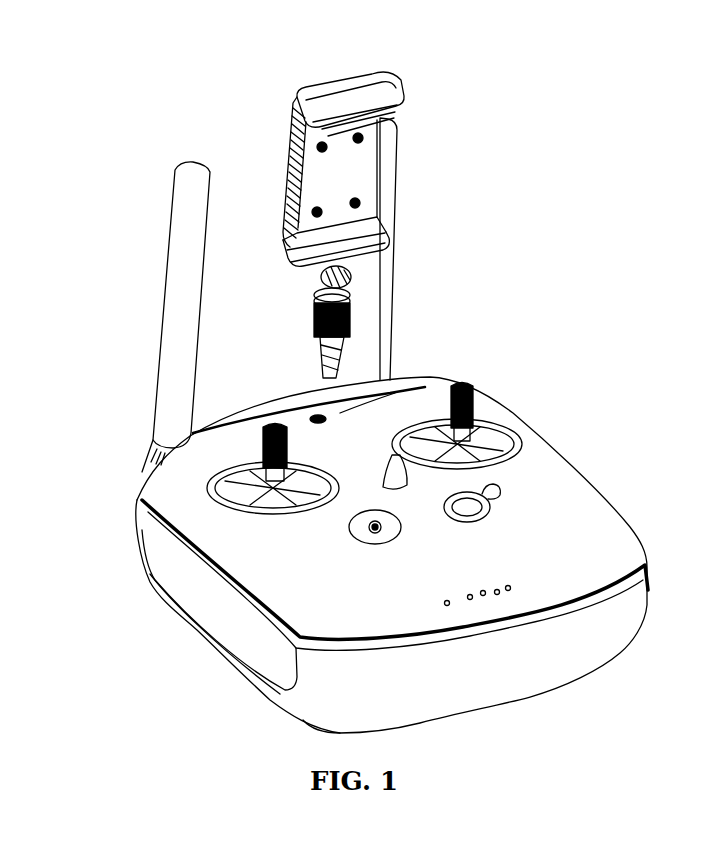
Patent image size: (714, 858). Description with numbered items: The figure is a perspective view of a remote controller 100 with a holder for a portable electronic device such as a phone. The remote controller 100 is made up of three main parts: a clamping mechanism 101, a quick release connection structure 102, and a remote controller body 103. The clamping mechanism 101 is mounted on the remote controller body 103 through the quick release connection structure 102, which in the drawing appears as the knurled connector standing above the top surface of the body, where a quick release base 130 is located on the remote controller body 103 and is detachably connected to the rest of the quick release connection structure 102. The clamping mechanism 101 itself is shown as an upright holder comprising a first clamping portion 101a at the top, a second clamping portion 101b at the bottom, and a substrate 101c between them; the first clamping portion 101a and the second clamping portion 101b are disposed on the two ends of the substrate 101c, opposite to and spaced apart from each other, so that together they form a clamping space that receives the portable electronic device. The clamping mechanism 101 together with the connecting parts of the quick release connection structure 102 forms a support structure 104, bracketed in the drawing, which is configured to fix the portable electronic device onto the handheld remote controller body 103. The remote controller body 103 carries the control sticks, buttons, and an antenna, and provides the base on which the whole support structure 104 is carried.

The remote controller 100 is at (245, 80).
The clamping mechanism 101 is at (477, 100).
The first clamping portion 101a is at (370, 88).
The second clamping portion 101b is at (365, 236).
The substrate 101c is at (352, 178).
The quick release connection structure 102 is at (340, 296).
The remote controller body 103 is at (252, 553).
The support structure 104 is at (527, 168).
The quick release base 130 is at (408, 383).